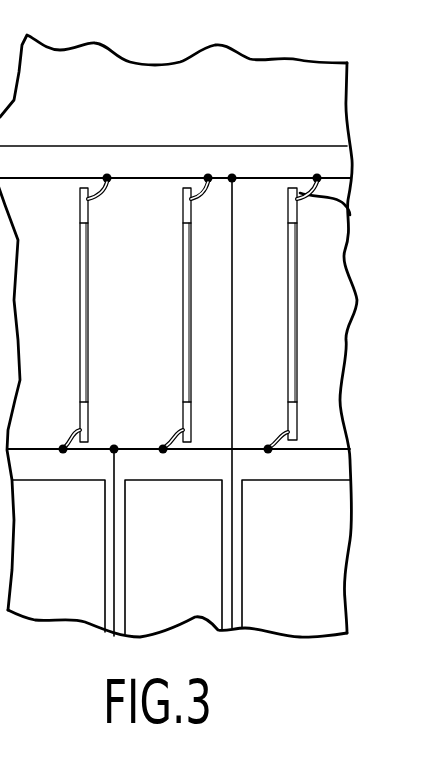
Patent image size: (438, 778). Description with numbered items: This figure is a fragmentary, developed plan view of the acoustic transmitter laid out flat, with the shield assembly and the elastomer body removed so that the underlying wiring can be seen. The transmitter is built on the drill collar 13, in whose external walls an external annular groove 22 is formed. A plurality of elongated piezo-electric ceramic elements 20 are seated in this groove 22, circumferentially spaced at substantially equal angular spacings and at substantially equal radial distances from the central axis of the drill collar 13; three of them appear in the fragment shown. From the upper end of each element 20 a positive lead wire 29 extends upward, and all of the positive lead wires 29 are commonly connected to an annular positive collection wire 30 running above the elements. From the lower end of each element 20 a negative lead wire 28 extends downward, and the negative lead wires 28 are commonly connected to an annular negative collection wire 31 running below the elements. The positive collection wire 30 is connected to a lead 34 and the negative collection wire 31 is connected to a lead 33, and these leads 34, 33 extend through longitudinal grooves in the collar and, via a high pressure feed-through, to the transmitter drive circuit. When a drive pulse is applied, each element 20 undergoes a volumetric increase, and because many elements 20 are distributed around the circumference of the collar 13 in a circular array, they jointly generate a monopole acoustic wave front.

The drill collar 13 is at (330, 97).
The annular positive collection wire 30 is at (340, 178).
The positive lead wire 29 is at (350, 213).
The elongated piezo-electric ceramic element 20 is at (88, 272).
The external annular groove 22 is at (332, 323).
The negative lead wire 28 is at (268, 449).
The annular negative collection wire 31 is at (333, 452).
The lead 33 is at (125, 550).
The lead 34 is at (242, 582).